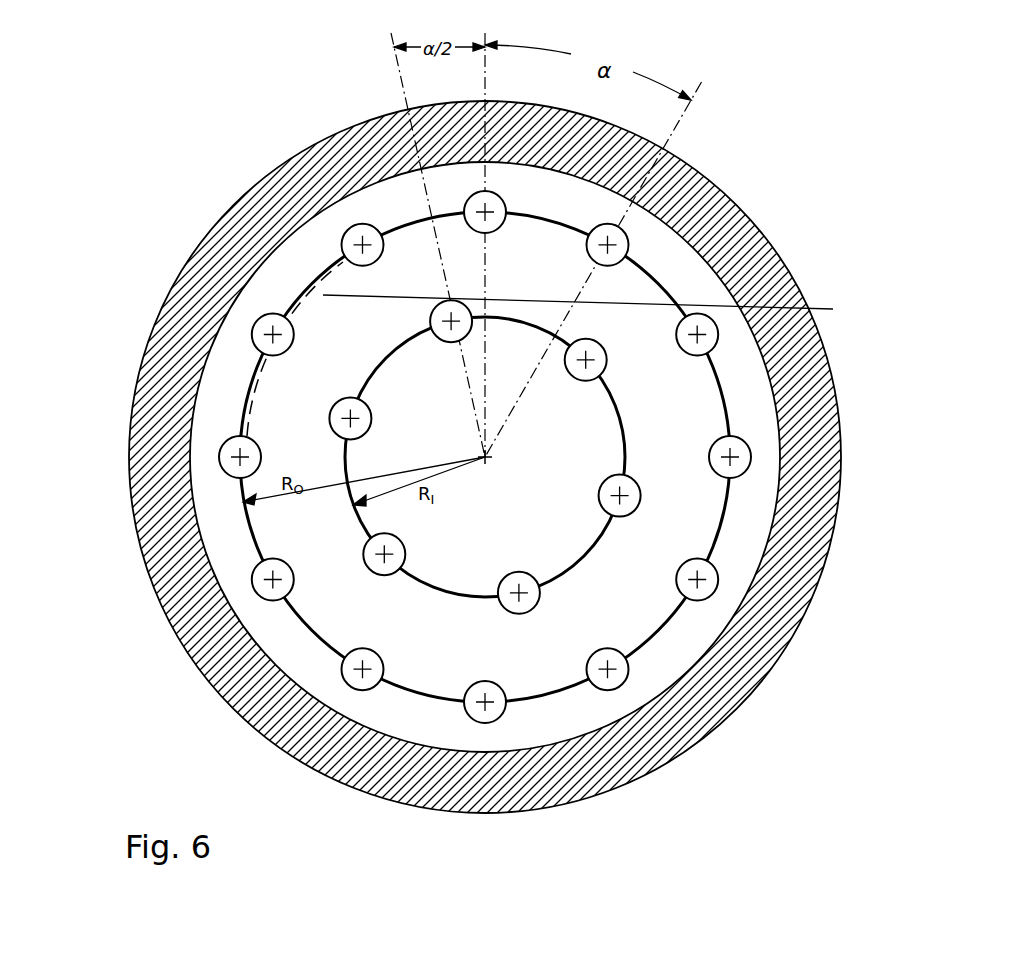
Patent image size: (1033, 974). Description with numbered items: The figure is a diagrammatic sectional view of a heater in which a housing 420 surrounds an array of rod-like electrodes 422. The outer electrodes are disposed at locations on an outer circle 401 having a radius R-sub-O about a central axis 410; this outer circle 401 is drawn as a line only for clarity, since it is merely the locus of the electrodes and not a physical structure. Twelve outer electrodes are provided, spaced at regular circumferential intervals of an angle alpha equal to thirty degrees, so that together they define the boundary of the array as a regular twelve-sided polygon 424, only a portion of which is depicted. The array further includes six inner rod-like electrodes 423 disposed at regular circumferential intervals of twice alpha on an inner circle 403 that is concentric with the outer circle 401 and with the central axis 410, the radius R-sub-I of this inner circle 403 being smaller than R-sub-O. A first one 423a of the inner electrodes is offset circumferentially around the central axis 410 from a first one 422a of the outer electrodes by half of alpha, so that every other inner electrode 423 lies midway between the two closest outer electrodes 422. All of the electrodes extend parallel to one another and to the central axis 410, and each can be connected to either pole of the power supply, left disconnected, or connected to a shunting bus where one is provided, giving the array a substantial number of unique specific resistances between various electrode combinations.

The outer circle 401 is at (310, 280).
The inner circle 403 is at (617, 395).
The central axis 410 is at (485, 457).
The housing 420 is at (157, 500).
The rod-like electrodes 422 is at (257, 326).
The first outer electrode 422a is at (487, 233).
The inner rod-like electrodes 423 is at (331, 415).
The first inner electrode 423a is at (443, 302).
The regular 12-sided polygon 424 is at (833, 309).